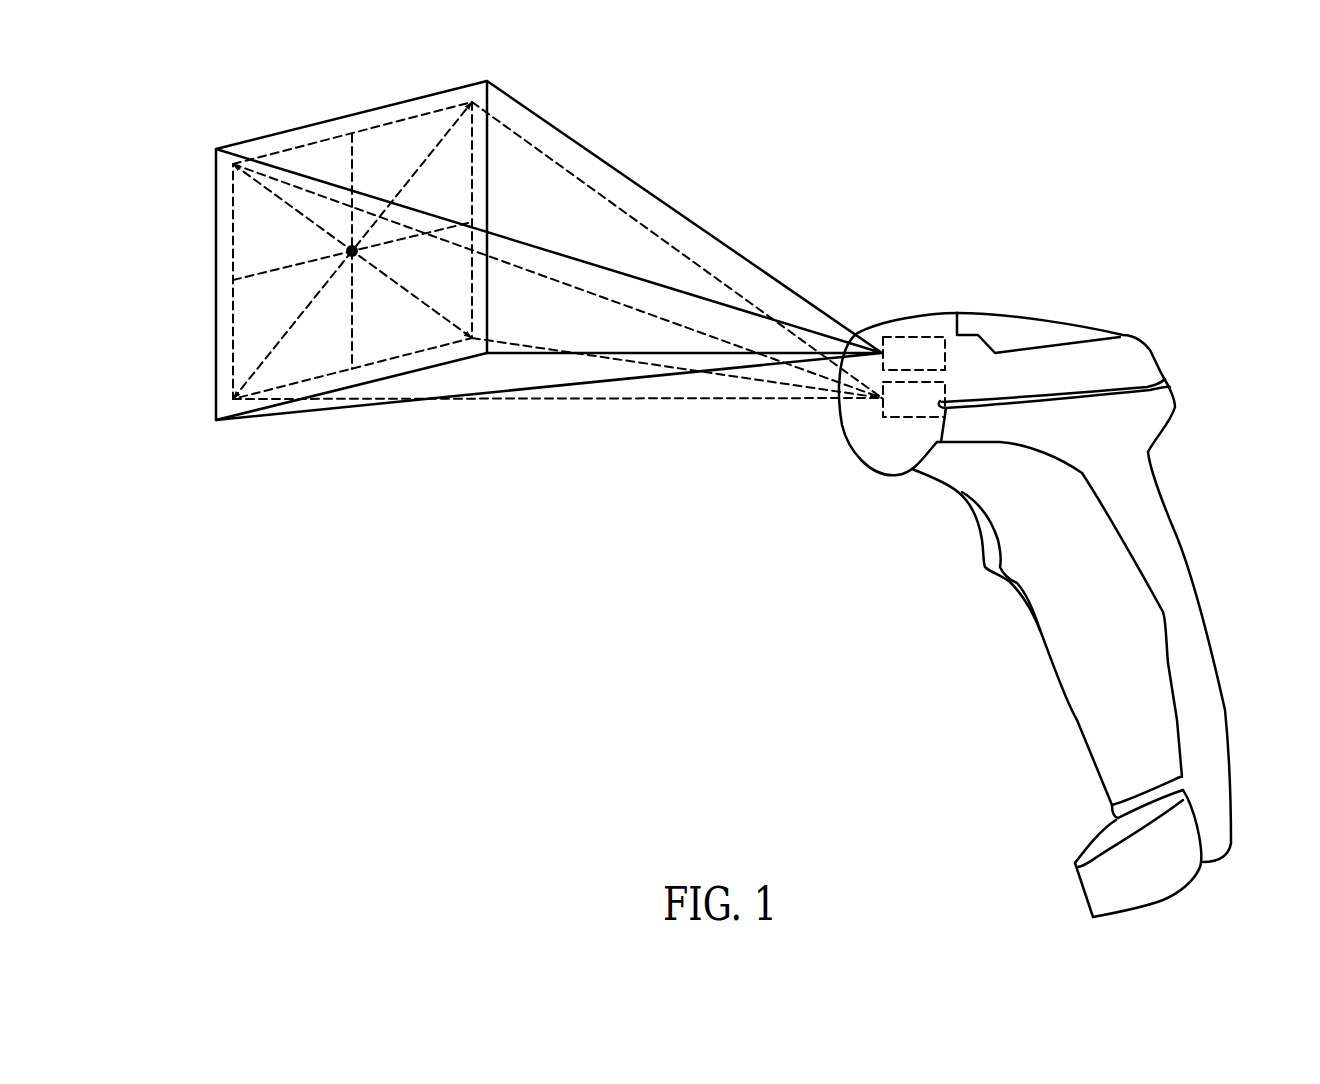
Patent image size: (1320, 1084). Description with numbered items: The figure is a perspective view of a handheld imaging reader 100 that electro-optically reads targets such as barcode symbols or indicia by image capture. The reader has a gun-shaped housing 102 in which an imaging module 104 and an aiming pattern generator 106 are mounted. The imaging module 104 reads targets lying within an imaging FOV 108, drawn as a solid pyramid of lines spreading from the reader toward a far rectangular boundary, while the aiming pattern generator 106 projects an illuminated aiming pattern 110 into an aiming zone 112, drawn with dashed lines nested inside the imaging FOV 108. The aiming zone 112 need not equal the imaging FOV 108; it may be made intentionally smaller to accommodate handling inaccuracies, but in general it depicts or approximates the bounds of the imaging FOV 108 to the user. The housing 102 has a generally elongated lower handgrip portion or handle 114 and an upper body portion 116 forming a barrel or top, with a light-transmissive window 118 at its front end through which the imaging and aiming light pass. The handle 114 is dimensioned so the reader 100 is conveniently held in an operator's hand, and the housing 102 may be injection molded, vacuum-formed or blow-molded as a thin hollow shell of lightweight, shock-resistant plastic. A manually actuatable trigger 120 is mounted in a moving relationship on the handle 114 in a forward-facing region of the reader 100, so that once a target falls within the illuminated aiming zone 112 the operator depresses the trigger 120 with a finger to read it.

The handheld imaging reader 100 is at (1174, 208).
The housing 102 is at (1068, 300).
The imaging module 104 is at (910, 382).
The aiming pattern generator 106 is at (914, 399).
The imaging FOV 108 is at (350, 115).
The illuminated aiming pattern 110 is at (253, 333).
The aiming zone 112 is at (232, 286).
The handle 114 is at (1195, 603).
The upper body portion 116 is at (1147, 358).
The light-transmissive window 118 is at (838, 408).
The trigger 120 is at (988, 560).